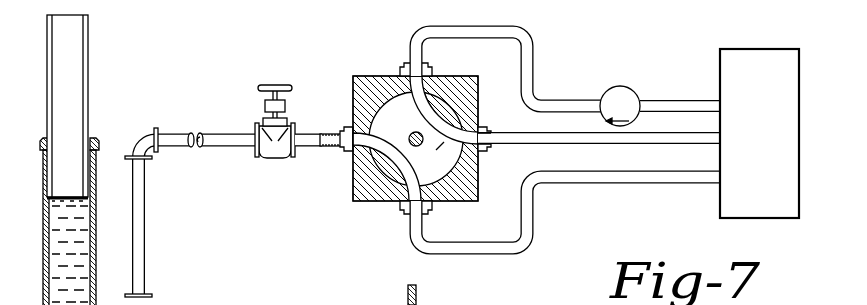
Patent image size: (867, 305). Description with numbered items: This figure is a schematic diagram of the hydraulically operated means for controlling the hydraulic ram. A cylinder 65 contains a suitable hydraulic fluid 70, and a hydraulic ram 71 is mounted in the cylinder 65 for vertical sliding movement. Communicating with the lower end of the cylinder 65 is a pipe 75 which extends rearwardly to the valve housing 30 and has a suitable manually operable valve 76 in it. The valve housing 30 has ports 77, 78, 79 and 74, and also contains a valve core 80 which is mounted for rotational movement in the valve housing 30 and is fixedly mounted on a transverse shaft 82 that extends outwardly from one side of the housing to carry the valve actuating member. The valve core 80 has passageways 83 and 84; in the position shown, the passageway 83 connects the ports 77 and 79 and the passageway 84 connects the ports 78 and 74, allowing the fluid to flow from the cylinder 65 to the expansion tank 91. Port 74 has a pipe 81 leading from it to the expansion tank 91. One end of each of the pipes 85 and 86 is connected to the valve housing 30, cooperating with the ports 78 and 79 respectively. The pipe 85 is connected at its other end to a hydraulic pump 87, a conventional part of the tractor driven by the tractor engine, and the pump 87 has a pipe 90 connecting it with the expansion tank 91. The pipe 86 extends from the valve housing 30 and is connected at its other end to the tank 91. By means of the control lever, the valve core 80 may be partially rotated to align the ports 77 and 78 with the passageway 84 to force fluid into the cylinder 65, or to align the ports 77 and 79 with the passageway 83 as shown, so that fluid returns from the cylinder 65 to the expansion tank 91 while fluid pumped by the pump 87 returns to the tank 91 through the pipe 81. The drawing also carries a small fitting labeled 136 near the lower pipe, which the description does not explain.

The valve housing 30 is at (353, 180).
The cylinder 65 is at (96, 222).
The hydraulic fluid 70 is at (82, 267).
The hydraulic ram 71 is at (88, 107).
The port 74 is at (484, 130).
The pipe 75 is at (146, 232).
The manually operable valve 76 is at (290, 158).
The port 77 is at (345, 128).
The port 78 is at (418, 90).
The port 79 is at (433, 198).
The valve core 80 is at (484, 150).
The pipe 81 is at (587, 146).
The transverse shaft 82 is at (410, 134).
The passageway 83 is at (392, 184).
The passageway 84 is at (443, 146).
The pipe 85 is at (533, 57).
The pipe 86 is at (533, 222).
The hydraulic pump 87 is at (621, 80).
The pipe 90 is at (700, 100).
The expansion tank 91 is at (782, 50).
The fitting 136 is at (416, 297).